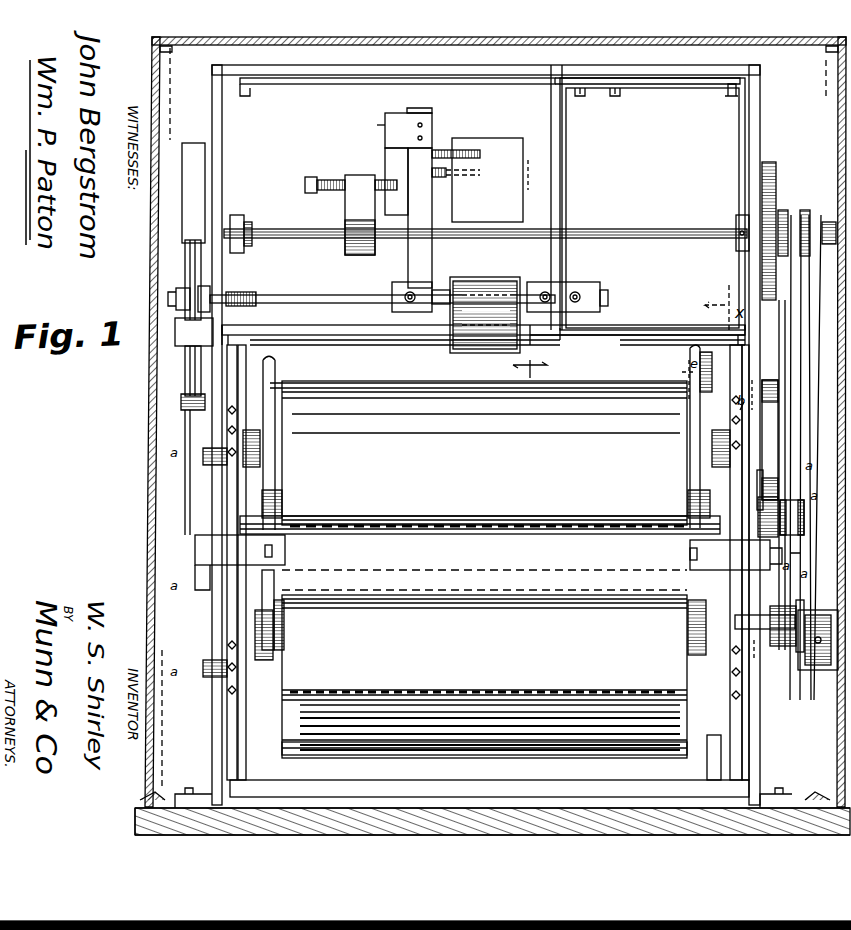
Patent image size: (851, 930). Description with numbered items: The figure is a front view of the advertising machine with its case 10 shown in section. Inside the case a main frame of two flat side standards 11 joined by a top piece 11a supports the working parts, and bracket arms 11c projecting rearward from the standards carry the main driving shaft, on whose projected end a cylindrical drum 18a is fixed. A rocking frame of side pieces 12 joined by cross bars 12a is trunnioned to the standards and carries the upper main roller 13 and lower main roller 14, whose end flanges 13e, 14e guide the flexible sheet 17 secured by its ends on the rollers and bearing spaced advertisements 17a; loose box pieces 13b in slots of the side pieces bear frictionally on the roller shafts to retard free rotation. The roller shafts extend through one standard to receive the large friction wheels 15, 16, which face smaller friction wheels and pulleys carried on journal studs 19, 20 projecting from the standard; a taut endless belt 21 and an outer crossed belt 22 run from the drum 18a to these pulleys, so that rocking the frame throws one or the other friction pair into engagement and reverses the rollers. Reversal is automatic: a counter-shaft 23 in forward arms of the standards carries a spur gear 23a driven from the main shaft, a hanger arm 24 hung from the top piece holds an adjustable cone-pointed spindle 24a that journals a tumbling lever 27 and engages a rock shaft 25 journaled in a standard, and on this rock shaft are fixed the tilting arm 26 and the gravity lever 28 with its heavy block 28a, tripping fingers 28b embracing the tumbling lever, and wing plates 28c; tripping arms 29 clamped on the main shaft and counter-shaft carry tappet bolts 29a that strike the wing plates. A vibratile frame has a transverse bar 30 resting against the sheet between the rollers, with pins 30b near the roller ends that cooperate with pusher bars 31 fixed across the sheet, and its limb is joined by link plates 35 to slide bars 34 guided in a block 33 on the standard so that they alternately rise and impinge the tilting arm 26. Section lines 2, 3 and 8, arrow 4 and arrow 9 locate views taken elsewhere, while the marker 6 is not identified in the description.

The case 10 is at (548, 46).
The side standards 11 is at (224, 183).
The top piece 11a is at (497, 77).
The bracket arms 11c is at (742, 218).
The side pieces of rocking frame 12 is at (268, 338).
The cross bars 12a is at (478, 374).
The upper main roller 13 is at (278, 388).
The loose box piece 13b is at (266, 644).
The flange 13e is at (280, 362).
The lower main roller 14 is at (325, 175).
The flange 14e is at (280, 578).
The friction wheel 15 is at (782, 724).
The friction wheel 16 is at (780, 418).
The flexible sheet 17 is at (484, 453).
The advertisements 17a is at (484, 685).
The drum 18a is at (784, 209).
The journal stud 19 is at (757, 618).
The journal stud 20 is at (802, 490).
The endless driving belt 21 is at (790, 330).
The crossed driving belt 22 is at (802, 388).
The counter-shaft 23 is at (704, 240).
The spur-gear wheel 23a is at (778, 167).
The hanger arm 24 is at (566, 183).
The spindle 24a is at (464, 282).
The rock shaft 25 is at (298, 293).
The tilting arm 26 is at (188, 214).
The tumbling lever 27 is at (468, 205).
The gravity lever 28 is at (408, 258).
The gravity block 28a is at (420, 111).
The tripping fingers 28b is at (433, 157).
The wing plates 28c is at (385, 125).
The tripping arms 29 is at (345, 207).
The tappet bolts 29a is at (397, 178).
The transverse bar 30 is at (742, 600).
The pins 30b is at (273, 547).
The pusher bars 31 is at (458, 525).
The guide block 33 is at (178, 345).
The slide bar 34 is at (182, 272).
The link plates 35 is at (188, 492).
The section line 2— 2 is at (796, 776).
The section line 3— 3 is at (142, 62).
The arrow 4 is at (170, 368).
The section line 6 is at (252, 393).
The section line 8— 8 is at (530, 267).
The arrow 9 is at (435, 330).